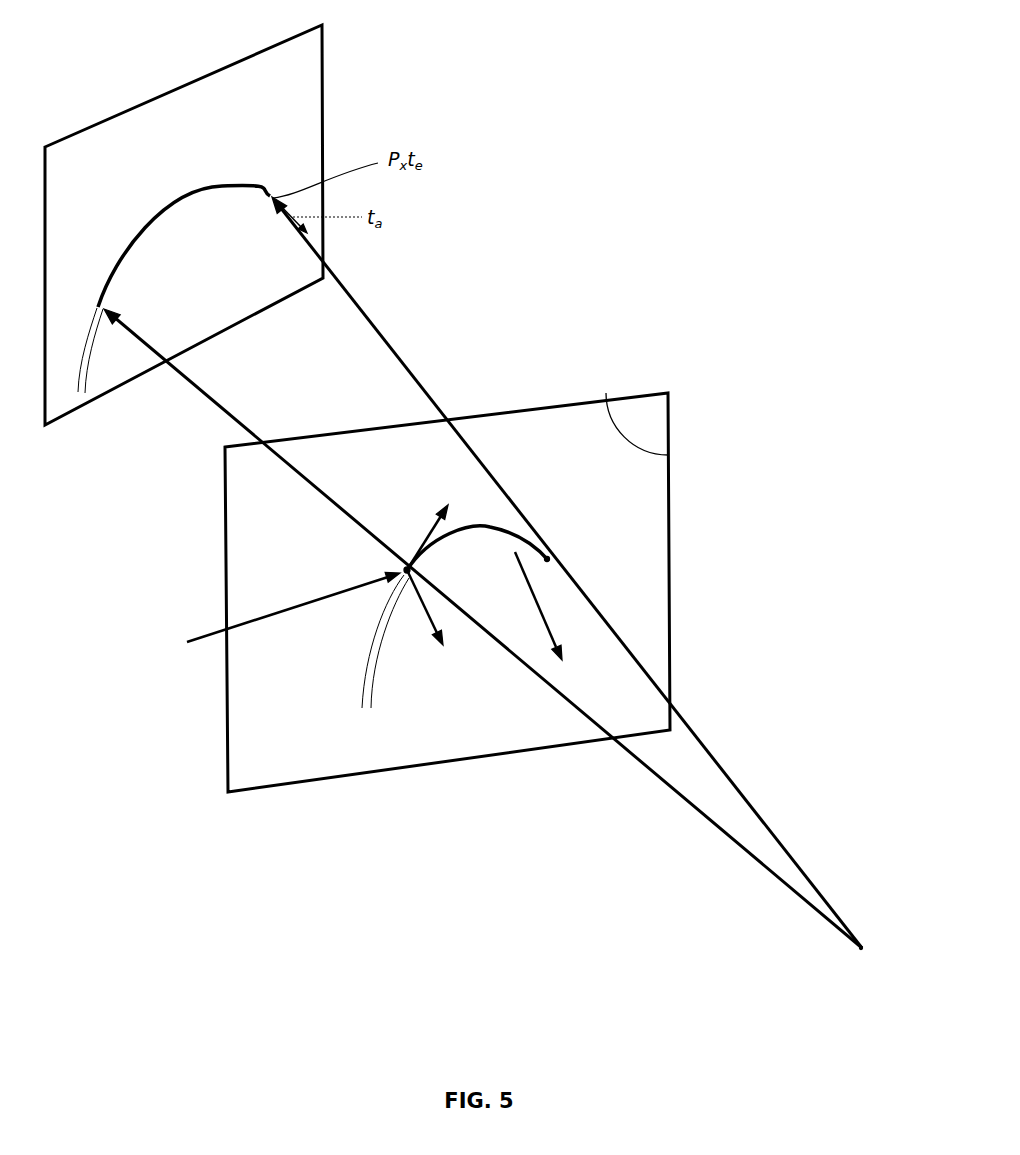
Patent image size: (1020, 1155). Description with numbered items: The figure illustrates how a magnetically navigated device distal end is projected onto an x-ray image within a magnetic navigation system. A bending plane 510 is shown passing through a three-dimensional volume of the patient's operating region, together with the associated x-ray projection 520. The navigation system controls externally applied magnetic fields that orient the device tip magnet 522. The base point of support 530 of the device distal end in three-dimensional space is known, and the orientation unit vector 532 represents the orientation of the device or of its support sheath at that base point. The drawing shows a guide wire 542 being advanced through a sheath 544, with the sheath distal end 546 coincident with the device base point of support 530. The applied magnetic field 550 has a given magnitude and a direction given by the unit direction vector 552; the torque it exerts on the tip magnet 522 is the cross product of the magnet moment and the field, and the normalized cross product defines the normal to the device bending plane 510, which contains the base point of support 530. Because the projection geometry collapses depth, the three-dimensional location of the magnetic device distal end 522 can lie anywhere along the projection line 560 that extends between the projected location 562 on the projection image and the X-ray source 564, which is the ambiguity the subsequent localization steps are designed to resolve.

The plane (P) 510 is at (670, 527).
The x-ray projection 520 is at (323, 138).
The device tip magnet m 522 is at (548, 560).
The base point of support X0 530 is at (397, 586).
The orientation vector u 532 is at (431, 527).
The guide wire 542 is at (493, 527).
The sheath 544 is at (361, 692).
The sheath distal end 546 is at (416, 571).
The applied magnetic field B 550 is at (540, 605).
The direction b 552 is at (428, 617).
The line (L) 560 is at (463, 447).
The location p 562 is at (262, 198).
The X-ray source S 564 is at (866, 945).